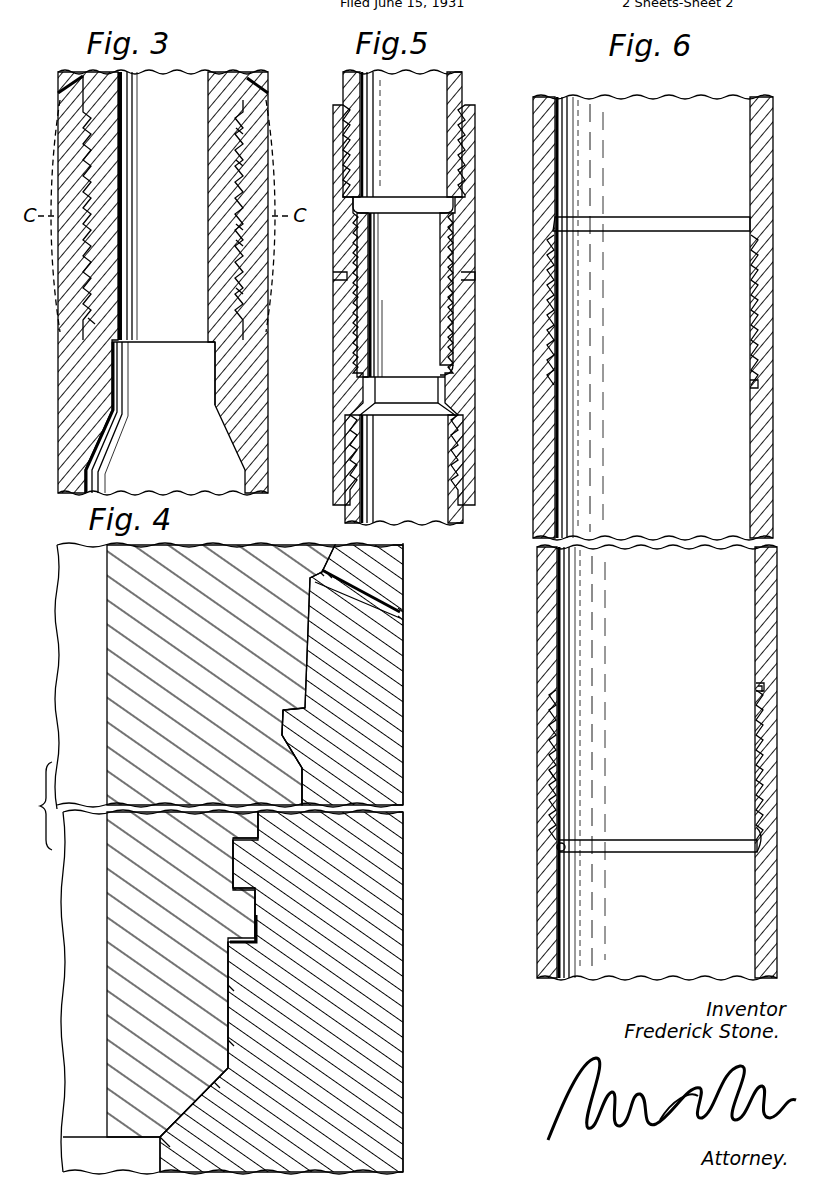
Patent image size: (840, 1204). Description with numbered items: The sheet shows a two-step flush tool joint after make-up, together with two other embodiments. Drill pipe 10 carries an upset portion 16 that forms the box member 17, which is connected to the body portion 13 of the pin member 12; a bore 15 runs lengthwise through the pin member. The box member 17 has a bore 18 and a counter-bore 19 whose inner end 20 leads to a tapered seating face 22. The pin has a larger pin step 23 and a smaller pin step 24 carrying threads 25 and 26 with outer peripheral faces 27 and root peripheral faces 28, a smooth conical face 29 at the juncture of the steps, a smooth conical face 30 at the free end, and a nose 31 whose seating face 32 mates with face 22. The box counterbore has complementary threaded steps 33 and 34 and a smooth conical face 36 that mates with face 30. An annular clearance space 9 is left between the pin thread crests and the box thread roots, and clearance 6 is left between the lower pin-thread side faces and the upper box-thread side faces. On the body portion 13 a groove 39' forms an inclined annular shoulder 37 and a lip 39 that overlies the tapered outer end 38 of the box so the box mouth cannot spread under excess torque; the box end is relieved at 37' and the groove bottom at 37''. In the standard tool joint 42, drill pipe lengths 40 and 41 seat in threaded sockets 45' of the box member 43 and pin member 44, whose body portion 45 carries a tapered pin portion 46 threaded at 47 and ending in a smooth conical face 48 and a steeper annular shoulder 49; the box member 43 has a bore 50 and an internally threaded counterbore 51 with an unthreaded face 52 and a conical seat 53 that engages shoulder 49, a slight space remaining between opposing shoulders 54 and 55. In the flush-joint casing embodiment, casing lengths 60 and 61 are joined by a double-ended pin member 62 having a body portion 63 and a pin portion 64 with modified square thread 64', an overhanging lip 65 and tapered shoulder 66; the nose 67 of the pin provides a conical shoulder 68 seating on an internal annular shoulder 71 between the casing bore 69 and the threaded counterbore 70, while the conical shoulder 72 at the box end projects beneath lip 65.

In FIG. 4, the clearance 6 is at (258, 945).
In FIG. 4, the annular clearance space 9 is at (262, 817).
In FIG. 4, the length of tubing or drill pipe 10 is at (385, 1143).
In FIG. 3, the pin member 12 is at (60, 75).
In FIG. 3, the body portion 13 is at (262, 83).
In FIG. 4, the body portion 13 is at (130, 563).
In FIG. 3, the bore 15 is at (158, 210).
In FIG. 4, the bore 15 is at (76, 982).
In FIG. 4, the upset portion 16 is at (175, 1148).
In FIG. 4, the box member 17 is at (384, 862).
In FIG. 3, the bore 18 is at (134, 417).
In FIG. 4, the bore 18 is at (85, 1150).
In FIG. 3, the counter-bore 19 is at (90, 140).
In FIG. 4, the inner end of counter-bore 20 is at (225, 1042).
In FIG. 3, the tapered shoulder or seating face 22 is at (214, 338).
In FIG. 4, the tapered shoulder or seating face 22 is at (210, 1075).
In FIG. 3, the upper pin-step 23 is at (240, 126).
In FIG. 4, the upper pin-step 23 is at (195, 750).
In FIG. 3, the lower pin-step 24 is at (224, 244).
In FIG. 4, the lower pin-step 24 is at (185, 870).
In FIG. 3, the threads 25 is at (243, 164).
In FIG. 4, the threads 25 is at (290, 792).
In FIG. 3, the threads 26 is at (232, 302).
In FIG. 4, the threads 26 is at (258, 925).
In FIG. 4, the outer peripheral thread faces 27 is at (305, 760).
In FIG. 4, the root peripheral thread faces 28 is at (285, 728).
In FIG. 3, the smooth conical face 29 is at (90, 210).
In FIG. 3, the smooth conical face 30 is at (96, 320).
In FIG. 4, the smooth conical face 30 is at (230, 990).
In FIG. 3, the nose 31 is at (207, 338).
In FIG. 4, the nose 31 is at (130, 1107).
In FIG. 3, the seating face or shoulder 32 is at (112, 346).
In FIG. 4, the seating face or shoulder 32 is at (190, 1100).
In FIG. 3, the upper threaded step 33 is at (246, 132).
In FIG. 3, the lower threaded step 34 is at (240, 232).
In FIG. 4, the smooth conical face 36 is at (232, 965).
In FIG. 4, the annular shoulder 37 is at (385, 591).
In FIG. 4, the relief 37' is at (294, 547).
In FIG. 4, the relief 37'' is at (324, 547).
In FIG. 4, the outer end of box member 38 is at (380, 600).
In FIG. 4, the lip 39 is at (445, 594).
In FIG. 4, the groove 39' is at (432, 620).
In FIG. 5, the length of drill pipe 40 is at (461, 83).
In FIG. 5, the length of drill pipe 41 is at (466, 518).
In FIG. 5, the tool joint 42 is at (484, 223).
In FIG. 5, the box member 43 is at (455, 356).
In FIG. 5, the pin member 44 is at (459, 214).
In FIG. 5, the body portion 45 is at (484, 241).
In FIG. 5, the threaded socket 45' is at (431, 286).
In FIG. 5, the pin portion 46 is at (362, 296).
In FIG. 5, the external threads 47 is at (372, 332).
In FIG. 5, the smooth conical face 48 is at (376, 352).
In FIG. 5, the annular shoulder 49 is at (380, 370).
In FIG. 5, the bore 50 is at (404, 390).
In FIG. 5, the counterbore 51 is at (352, 318).
In FIG. 5, the unthreaded face 52 is at (444, 374).
In FIG. 5, the seat or shoulder 53 is at (432, 378).
In FIG. 5, the shoulder 54 is at (332, 276).
In FIG. 5, the shoulder 55 is at (478, 276).
In FIG. 6, the casing length 60 is at (545, 156).
In FIG. 6, the casing length 61 is at (565, 956).
In FIG. 6, the pin member 62 is at (764, 468).
In FIG. 6, the body portion 63 is at (760, 418).
In FIG. 6, the pin portion 64 is at (655, 537).
In FIG. 6, the modified square thread 64' is at (786, 765).
In FIG. 6, the overhanging lip 65 is at (764, 388).
In FIG. 6, the tapered shoulder 66 is at (545, 700).
In FIG. 6, the nose 67 is at (756, 822).
In FIG. 6, the conical shoulder 68 is at (757, 852).
In FIG. 6, the main bore 69 is at (566, 878).
In FIG. 6, the counterbore 70 is at (549, 784).
In FIG. 6, the internal annular shoulder 71 is at (556, 848).
In FIG. 6, the conical shoulder 72 is at (766, 692).